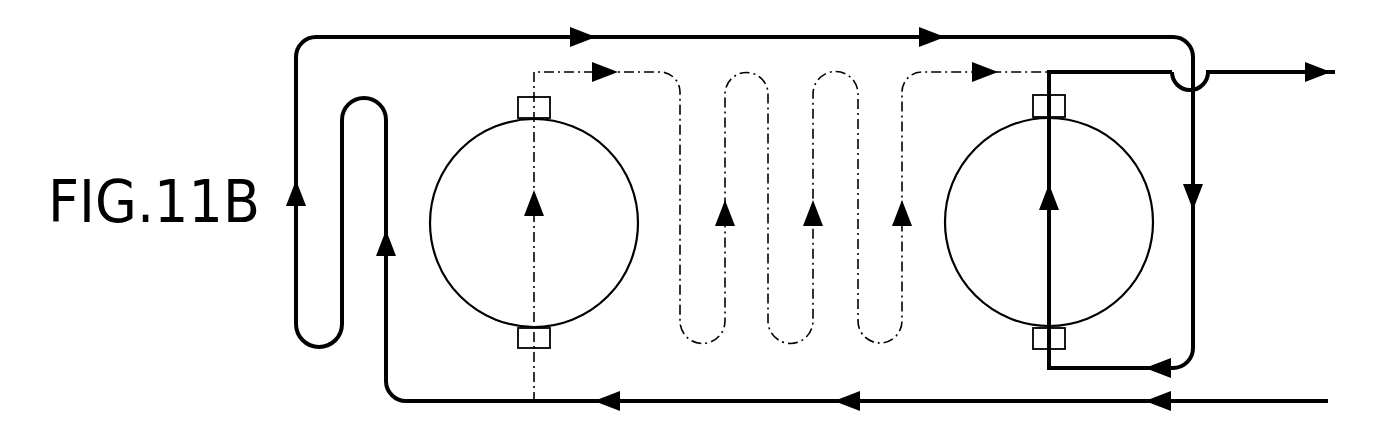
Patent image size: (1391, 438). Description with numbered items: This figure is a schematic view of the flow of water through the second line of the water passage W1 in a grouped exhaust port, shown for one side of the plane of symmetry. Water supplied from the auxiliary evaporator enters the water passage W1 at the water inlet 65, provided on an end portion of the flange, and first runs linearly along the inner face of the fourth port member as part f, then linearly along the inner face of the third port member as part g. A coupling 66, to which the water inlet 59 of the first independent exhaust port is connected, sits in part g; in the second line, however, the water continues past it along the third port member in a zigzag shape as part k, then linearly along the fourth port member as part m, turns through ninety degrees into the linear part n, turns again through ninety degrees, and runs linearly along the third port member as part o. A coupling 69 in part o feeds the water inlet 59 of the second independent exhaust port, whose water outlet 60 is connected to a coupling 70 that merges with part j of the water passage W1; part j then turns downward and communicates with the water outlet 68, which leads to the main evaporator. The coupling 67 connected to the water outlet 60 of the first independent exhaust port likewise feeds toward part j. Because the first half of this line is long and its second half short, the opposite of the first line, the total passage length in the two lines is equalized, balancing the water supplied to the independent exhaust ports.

The coupling 67 is at (518, 108).
The coupling 66 is at (518, 338).
The coupling 70 is at (1033, 106).
The coupling 69 is at (1033, 339).
The water outlet 60 is at (1050, 120).
The water inlet 59 is at (1047, 326).
The water outlet 68 is at (1287, 72).
The water inlet 65 is at (1313, 395).
The water passage W1 is at (717, 399).
The part k is at (345, 277).
The part m is at (740, 38).
The part n is at (1193, 158).
The part o is at (1118, 368).
The part j is at (1227, 70).
The part g is at (567, 400).
The part f is at (886, 400).